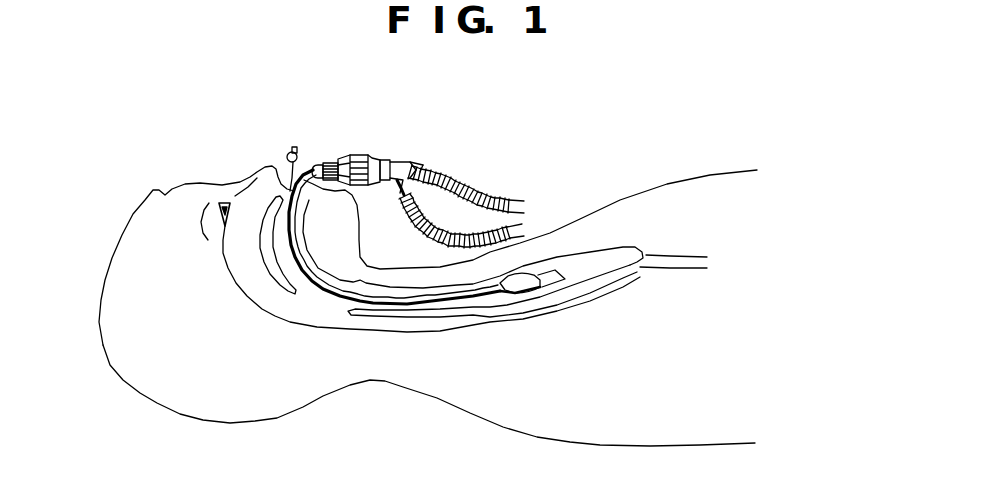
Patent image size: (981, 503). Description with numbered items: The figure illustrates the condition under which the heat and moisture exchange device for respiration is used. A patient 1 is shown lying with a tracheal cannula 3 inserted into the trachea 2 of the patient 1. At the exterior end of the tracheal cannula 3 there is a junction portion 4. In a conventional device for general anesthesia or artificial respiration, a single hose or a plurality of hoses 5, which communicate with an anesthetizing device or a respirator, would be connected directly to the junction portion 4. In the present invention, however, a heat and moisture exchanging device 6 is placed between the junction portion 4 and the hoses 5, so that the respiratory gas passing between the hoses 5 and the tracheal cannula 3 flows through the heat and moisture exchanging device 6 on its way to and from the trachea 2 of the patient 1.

The patient 1 is at (667, 182).
The trachea 2 is at (587, 256).
The tracheal cannula 3 is at (418, 303).
The junction portion 4 is at (322, 162).
The hoses 5 is at (449, 222).
The heat and moisture exchanging device 6 is at (357, 152).